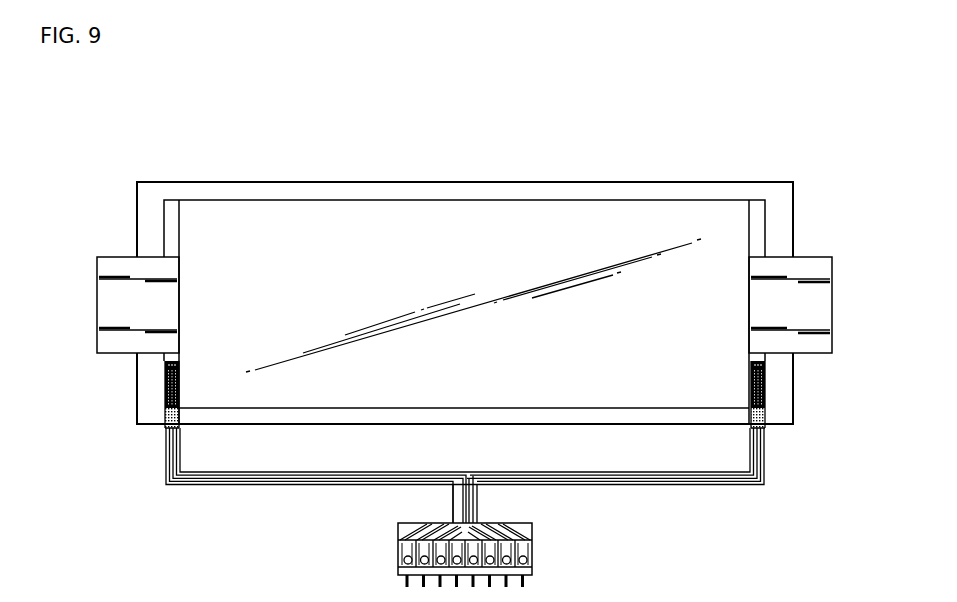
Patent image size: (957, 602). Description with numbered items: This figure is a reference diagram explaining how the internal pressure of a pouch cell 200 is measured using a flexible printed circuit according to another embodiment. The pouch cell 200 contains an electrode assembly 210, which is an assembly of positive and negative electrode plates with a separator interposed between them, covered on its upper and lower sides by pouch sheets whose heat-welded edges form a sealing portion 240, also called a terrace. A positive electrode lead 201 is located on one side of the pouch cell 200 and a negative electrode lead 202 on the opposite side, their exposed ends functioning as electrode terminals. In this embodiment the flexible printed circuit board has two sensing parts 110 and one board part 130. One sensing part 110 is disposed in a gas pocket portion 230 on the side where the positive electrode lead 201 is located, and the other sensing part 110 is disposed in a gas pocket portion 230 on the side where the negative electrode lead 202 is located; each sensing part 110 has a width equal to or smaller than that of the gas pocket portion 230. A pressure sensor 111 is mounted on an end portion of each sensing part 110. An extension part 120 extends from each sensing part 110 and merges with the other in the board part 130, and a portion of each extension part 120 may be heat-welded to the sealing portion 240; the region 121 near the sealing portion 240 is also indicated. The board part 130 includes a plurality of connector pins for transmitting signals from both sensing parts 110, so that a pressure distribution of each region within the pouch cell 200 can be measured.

The pouch cell 200 is at (309, 143).
The gas pocket portion 230 is at (173, 214).
The electrode assembly 210 is at (445, 222).
The negative electrode lead 202 is at (109, 303).
The positive electrode lead 201 is at (820, 303).
The pressure sensor 111 is at (163, 372).
The sealing portion 240 is at (157, 394).
The sensing part 110 is at (163, 415).
The connection portion 121 is at (164, 424).
The extension part 120 is at (236, 491).
The board part 130 is at (542, 557).